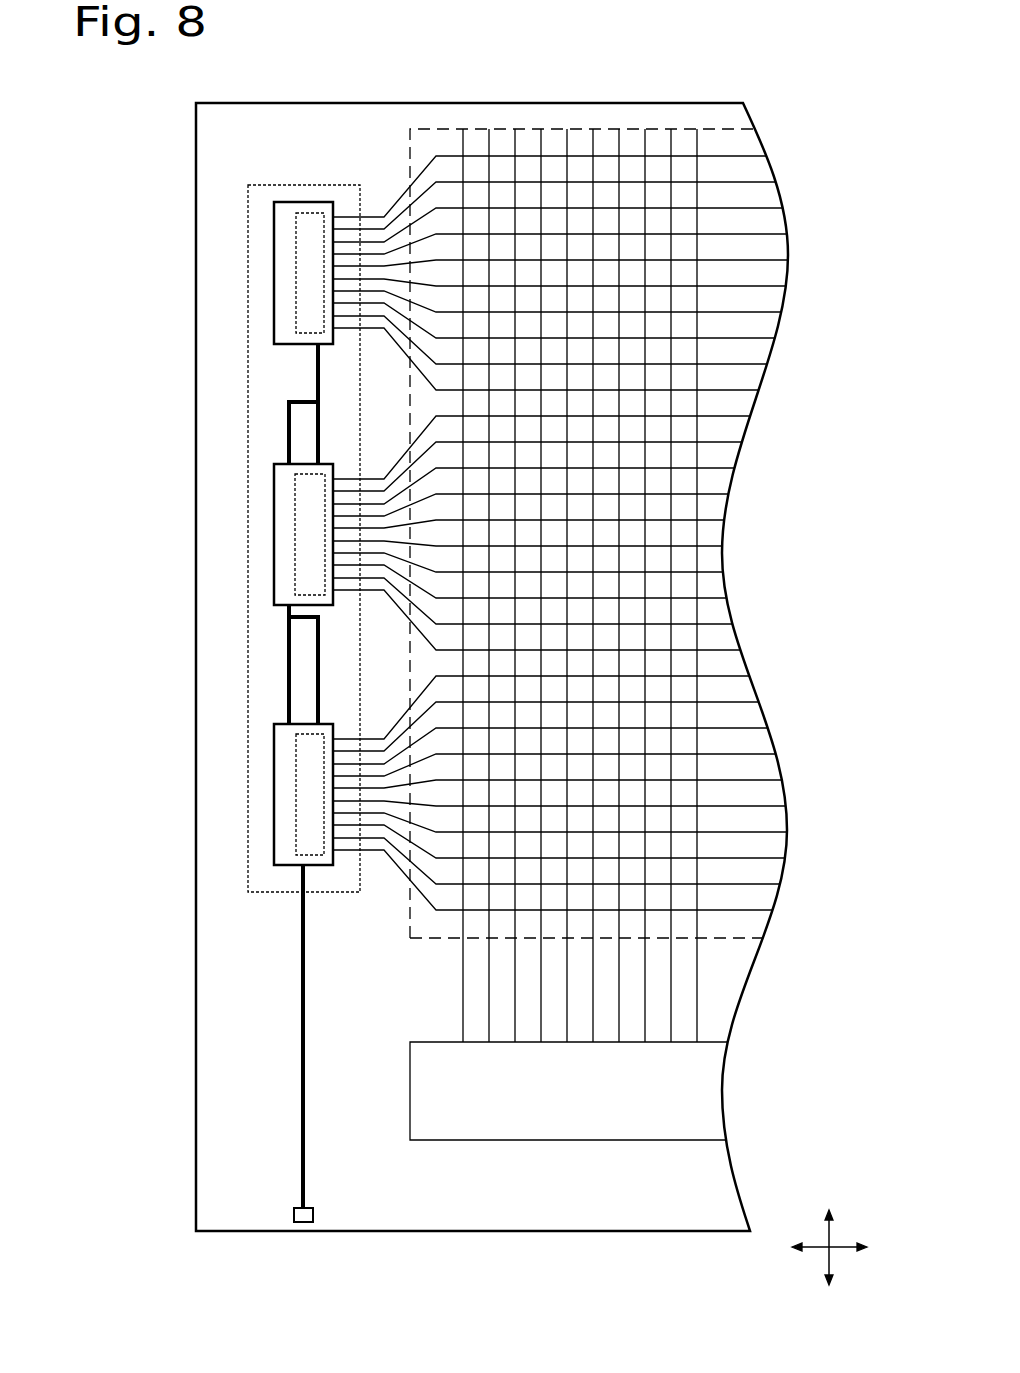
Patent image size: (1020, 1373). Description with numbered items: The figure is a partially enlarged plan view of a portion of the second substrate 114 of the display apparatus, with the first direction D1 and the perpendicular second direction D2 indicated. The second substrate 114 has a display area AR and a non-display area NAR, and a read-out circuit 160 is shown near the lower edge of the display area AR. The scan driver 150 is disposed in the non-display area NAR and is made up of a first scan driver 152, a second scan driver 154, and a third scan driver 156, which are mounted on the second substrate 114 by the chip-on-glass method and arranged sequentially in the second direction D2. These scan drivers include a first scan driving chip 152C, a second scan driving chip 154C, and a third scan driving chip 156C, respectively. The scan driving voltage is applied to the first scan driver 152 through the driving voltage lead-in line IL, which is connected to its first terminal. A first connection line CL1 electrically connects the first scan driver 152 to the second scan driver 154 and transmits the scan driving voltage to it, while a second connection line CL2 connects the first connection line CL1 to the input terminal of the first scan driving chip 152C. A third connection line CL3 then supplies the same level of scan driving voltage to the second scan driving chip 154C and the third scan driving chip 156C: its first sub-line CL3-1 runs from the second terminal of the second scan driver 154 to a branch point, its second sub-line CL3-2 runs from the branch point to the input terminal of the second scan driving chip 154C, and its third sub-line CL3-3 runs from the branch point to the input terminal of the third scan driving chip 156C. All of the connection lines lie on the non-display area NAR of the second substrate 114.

The second substrate 114 is at (196, 131).
The scan driver 150 is at (248, 197).
The third scan driver 156 is at (218, 273).
The third scan driving chip 156C is at (296, 283).
The third connection line CL3 is at (176, 404).
The third sub-line CL3-3 is at (318, 365).
The first sub-line CL3-1 is at (289, 412).
The second sub-line CL3-2 is at (318, 440).
The second scan driver 154 is at (218, 534).
The second scan driving chip 154C is at (295, 500).
The second connection line CL2 is at (318, 640).
The first connection line CL1 is at (289, 688).
The first scan driver 152 is at (218, 794).
The first scan driving chip 152C is at (296, 828).
The driving voltage lead-in line IL is at (303, 952).
The read-out circuit 160 is at (588, 1140).
The non-display area NAR is at (238, 466).
The display area AR is at (530, 130).
The first direction D1 is at (841, 1247).
The second direction D2 is at (829, 1261).